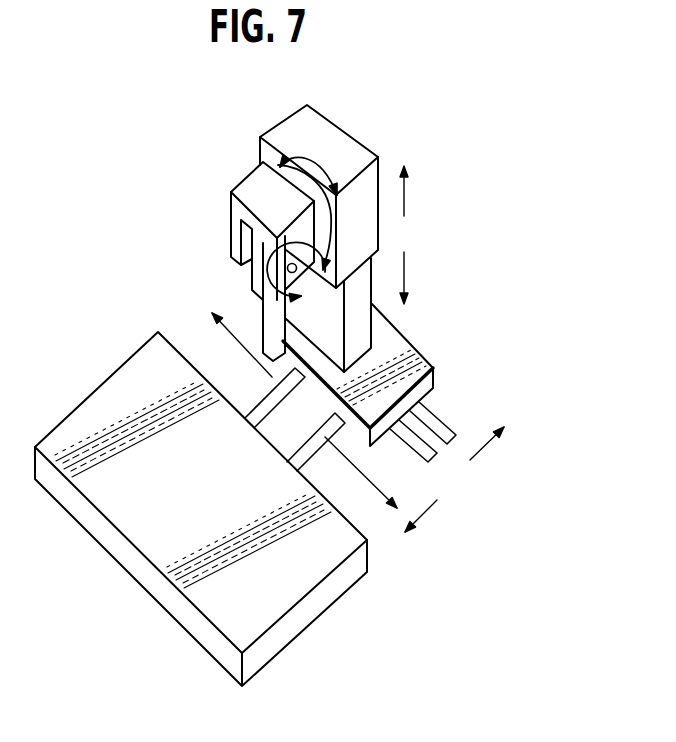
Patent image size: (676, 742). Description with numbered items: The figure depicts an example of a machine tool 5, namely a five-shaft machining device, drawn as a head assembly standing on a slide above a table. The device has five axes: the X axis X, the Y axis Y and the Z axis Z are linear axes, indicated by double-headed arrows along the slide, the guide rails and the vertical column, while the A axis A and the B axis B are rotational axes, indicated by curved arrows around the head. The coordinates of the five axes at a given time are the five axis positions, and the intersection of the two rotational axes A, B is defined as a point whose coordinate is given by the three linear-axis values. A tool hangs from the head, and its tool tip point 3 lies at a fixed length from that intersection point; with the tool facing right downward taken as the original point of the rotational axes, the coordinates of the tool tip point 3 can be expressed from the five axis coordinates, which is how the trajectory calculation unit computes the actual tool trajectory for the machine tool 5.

The tool tip point 3 is at (272, 372).
The machine tool 5 is at (413, 283).
The A axis A is at (299, 240).
The B axis B is at (308, 168).
The X axis X is at (304, 410).
The Y axis Y is at (454, 479).
The Z axis Z is at (403, 235).